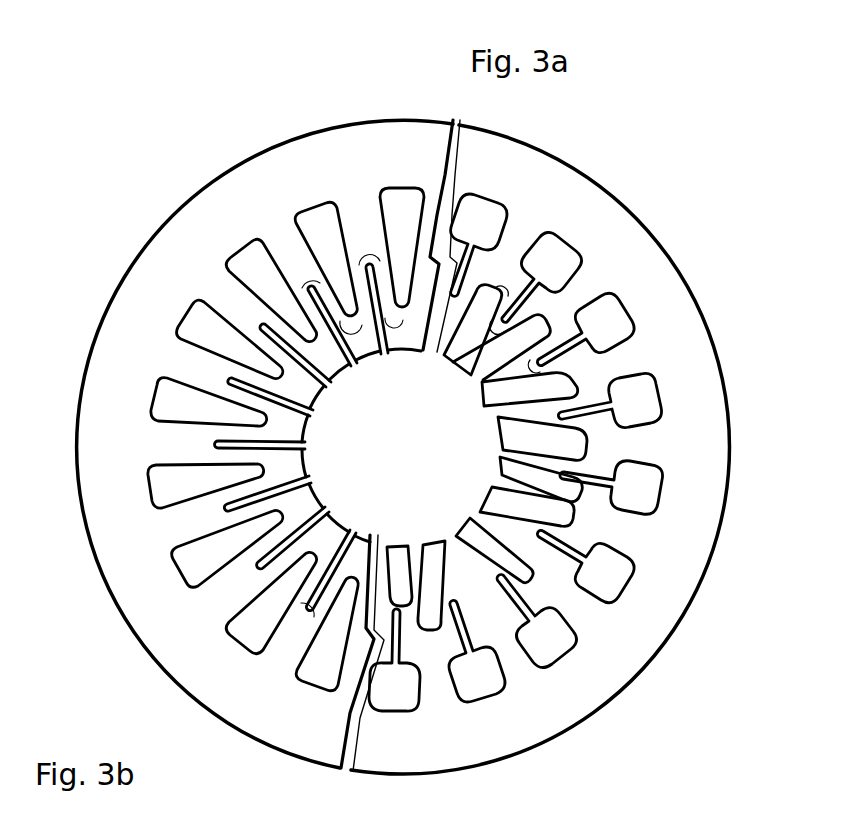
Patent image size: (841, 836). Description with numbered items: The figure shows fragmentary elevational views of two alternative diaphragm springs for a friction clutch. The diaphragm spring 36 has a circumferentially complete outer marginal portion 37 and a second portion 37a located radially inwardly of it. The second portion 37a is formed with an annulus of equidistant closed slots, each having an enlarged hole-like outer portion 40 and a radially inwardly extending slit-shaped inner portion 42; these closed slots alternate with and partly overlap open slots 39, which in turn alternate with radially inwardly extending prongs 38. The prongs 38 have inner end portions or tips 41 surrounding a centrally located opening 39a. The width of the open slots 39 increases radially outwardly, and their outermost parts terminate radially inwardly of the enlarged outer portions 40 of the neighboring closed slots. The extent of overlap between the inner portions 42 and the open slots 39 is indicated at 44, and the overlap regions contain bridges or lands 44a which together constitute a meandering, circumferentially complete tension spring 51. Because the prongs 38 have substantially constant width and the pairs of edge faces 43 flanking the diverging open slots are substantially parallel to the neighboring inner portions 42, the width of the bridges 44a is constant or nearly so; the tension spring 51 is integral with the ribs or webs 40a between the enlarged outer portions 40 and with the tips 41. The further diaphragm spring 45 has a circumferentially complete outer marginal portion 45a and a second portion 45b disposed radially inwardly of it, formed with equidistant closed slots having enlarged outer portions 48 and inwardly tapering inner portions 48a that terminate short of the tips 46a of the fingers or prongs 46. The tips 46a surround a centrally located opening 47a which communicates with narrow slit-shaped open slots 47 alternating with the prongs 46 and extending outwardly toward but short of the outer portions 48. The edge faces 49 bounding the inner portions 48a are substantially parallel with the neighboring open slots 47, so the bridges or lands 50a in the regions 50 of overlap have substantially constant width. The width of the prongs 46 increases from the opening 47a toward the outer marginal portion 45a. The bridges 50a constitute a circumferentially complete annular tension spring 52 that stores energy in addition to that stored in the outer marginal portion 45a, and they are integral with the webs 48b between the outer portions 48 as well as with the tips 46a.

In FIG. 3A, the diaphragm spring 36 is at (561, 443).
In FIG. 3A, the outer marginal portion 37 is at (574, 163).
In FIG. 3A, the second portion 37a is at (622, 535).
In FIG. 3A, the prongs 38 is at (472, 355).
In FIG. 3A, the open slots 39 is at (496, 418).
In FIG. 3A, the centrally located opening 39a is at (500, 420).
In FIG. 3A, the enlarged hole-like outer portions 40 is at (526, 475).
In FIG. 3A, the ribs or webs 40a is at (436, 700).
In FIG. 3A, the inner end portions or tips 41 is at (470, 522).
In FIG. 3A, the slit-shaped inner portions 42 is at (585, 478).
In FIG. 3A, the edge faces 43 is at (524, 550).
In FIG. 3A, the extent of overlap 44 is at (600, 375).
In FIG. 3A, the bridges or lands 44a is at (512, 660).
In FIG. 3B, the diaphragm spring 45 is at (241, 444).
In FIG. 3B, the outer marginal portion 45a is at (152, 247).
In FIG. 3B, the second portion 45b is at (160, 441).
In FIG. 3B, the fingers or prongs 46 is at (360, 441).
In FIG. 3B, the inner end portions or tips 46a is at (303, 400).
In FIG. 3B, the open slots 47 is at (300, 462).
In FIG. 3B, the centrally located opening 47a is at (370, 504).
In FIG. 3B, the enlarged outer portions 48 is at (194, 465).
In FIG. 3B, the inwardly tapering inner portions 48a is at (401, 298).
In FIG. 3B, the webs 48b is at (283, 238).
In FIG. 3B, the edge faces 49 is at (346, 641).
In FIG. 3B, the regions of overlap 50 is at (305, 503).
In FIG. 3B, the bridges or lands 50a is at (222, 387).
In FIG. 3A, the tension spring 51 is at (540, 330).
In FIG. 3B, the annular tension spring 52 is at (359, 255).